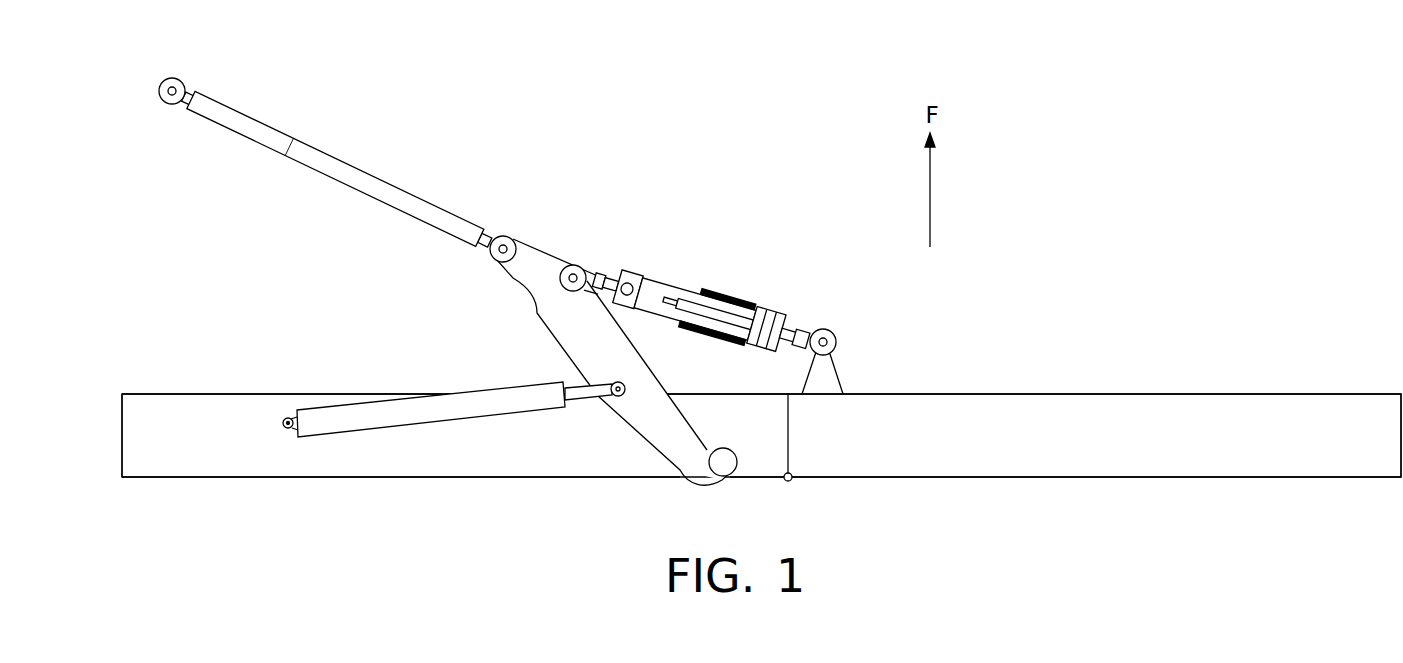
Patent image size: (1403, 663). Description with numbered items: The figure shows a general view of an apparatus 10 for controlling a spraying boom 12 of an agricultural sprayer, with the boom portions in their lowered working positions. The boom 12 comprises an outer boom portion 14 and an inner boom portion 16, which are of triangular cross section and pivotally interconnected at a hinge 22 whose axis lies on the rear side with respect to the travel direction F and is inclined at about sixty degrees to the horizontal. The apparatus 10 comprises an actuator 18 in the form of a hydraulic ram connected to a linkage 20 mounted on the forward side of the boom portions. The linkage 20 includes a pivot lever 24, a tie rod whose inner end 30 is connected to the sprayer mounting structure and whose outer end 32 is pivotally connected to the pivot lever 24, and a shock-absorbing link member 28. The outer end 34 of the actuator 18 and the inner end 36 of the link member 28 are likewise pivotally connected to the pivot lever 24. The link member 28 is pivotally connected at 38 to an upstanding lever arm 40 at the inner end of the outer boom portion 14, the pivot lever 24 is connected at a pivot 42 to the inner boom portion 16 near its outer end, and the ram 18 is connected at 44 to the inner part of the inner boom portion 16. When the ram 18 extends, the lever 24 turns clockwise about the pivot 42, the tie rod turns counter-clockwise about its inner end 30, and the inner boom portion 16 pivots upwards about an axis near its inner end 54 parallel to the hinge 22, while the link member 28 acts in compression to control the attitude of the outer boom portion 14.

The apparatus 10 is at (718, 195).
The spraying boom 12 is at (1056, 491).
The outer boom portion 14 is at (1160, 390).
The inner boom portion 16 is at (223, 478).
The actuator 18 is at (387, 428).
The linkage 20 is at (337, 169).
The hinge 22 is at (789, 483).
The pivot lever 24 is at (647, 432).
The shock-absorbing link member 28 is at (721, 329).
The inner end of tie rod 30 is at (172, 88).
The outer end of tie rod 32 is at (503, 246).
The outer end of actuator 34 is at (696, 351).
The inner end of link member 36 is at (575, 275).
The pivotal connection 38 is at (830, 332).
The upstanding lever arm 40 is at (823, 375).
The pivot 42 is at (726, 470).
The pivotal connection 44 is at (289, 430).
The inner end of inner boom portion 54 is at (115, 449).